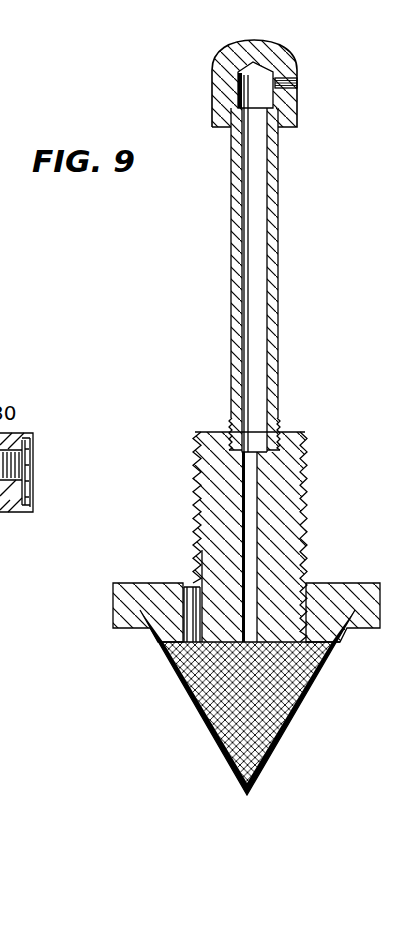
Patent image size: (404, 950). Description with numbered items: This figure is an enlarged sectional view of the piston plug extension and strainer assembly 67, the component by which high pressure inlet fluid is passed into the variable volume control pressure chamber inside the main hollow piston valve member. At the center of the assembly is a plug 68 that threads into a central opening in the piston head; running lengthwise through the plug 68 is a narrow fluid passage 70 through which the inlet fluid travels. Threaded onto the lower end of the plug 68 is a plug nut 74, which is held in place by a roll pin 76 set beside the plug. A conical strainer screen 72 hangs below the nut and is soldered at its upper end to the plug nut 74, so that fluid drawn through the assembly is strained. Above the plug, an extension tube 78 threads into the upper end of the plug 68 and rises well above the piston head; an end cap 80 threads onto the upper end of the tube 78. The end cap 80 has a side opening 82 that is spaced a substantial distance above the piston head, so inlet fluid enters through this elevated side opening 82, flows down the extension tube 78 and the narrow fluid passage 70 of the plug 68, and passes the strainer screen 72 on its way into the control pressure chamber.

The piston plug extension and strainer assembly 67 is at (321, 410).
The plug 68 is at (290, 477).
The narrow fluid passage 70 is at (250, 537).
The strainer screen 72 is at (300, 717).
The plug nut 74 is at (358, 597).
The roll pin 76 is at (190, 583).
The extension tube 78 is at (275, 373).
The end cap 80 is at (235, 44).
The side opening 82 is at (297, 83).